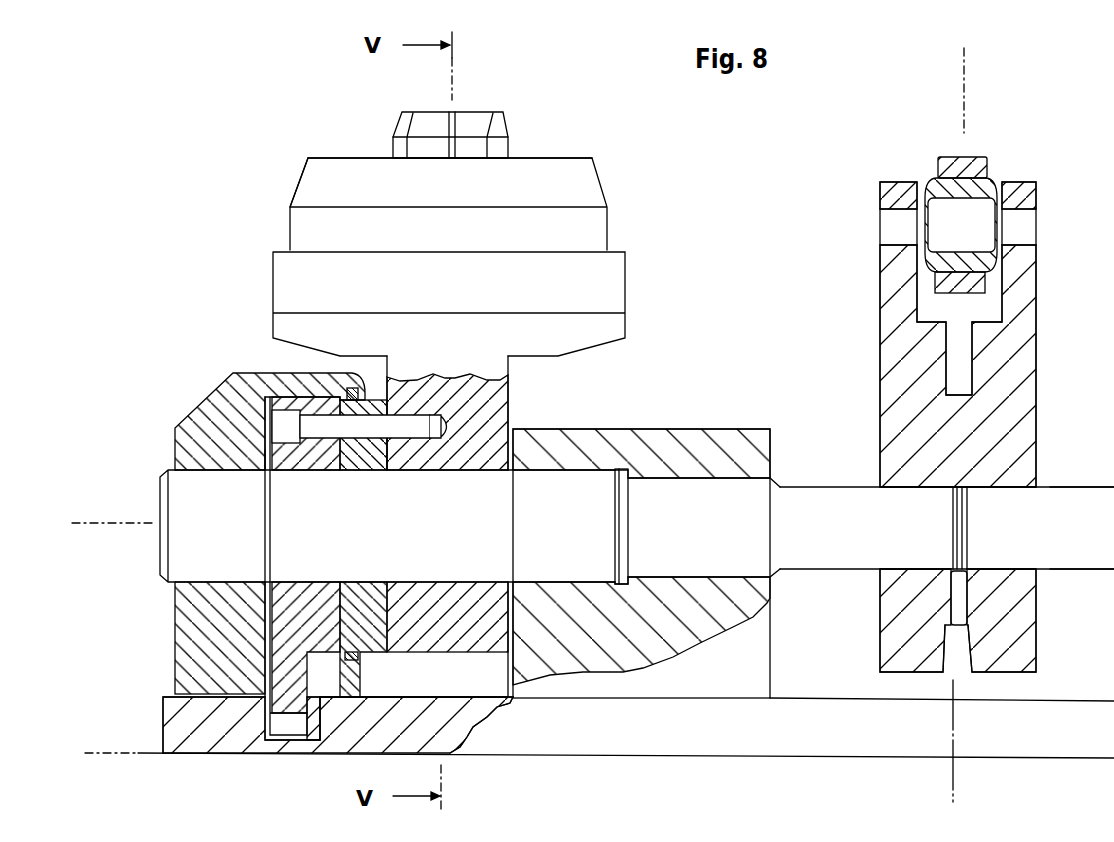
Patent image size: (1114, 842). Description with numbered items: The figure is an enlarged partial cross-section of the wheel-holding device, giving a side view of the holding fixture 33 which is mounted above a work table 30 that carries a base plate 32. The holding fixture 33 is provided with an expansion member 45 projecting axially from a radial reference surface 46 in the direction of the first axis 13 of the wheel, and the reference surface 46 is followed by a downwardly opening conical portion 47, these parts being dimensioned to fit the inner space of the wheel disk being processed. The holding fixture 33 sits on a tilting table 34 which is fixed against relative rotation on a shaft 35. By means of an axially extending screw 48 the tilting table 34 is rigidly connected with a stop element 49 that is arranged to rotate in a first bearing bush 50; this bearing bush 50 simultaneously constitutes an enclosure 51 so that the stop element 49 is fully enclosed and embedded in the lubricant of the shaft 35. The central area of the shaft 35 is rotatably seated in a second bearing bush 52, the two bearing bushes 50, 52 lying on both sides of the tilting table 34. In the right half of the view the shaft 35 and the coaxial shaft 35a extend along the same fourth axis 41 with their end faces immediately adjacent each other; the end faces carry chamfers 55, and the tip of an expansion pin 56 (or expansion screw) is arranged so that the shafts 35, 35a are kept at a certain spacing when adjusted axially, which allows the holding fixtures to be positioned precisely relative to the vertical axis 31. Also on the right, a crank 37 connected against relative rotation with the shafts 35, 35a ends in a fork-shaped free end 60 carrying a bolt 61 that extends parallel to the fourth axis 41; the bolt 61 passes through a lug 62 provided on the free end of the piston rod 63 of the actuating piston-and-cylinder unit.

The first axis 13 is at (453, 60).
The work table 30 is at (106, 746).
The vertical axis 31 is at (965, 102).
The base plate 32 is at (840, 756).
The holding fixture 33 is at (608, 183).
The tilting table 34 is at (510, 389).
The shaft 35 is at (828, 487).
The shaft 35a is at (1092, 487).
The crank 37 is at (1025, 334).
The fourth axis 41 is at (89, 520).
The expansion member 45 is at (430, 124).
The radial reference surface 46 is at (353, 157).
The conical portion 47 is at (301, 176).
The axially extending screw 48 is at (369, 432).
The stop element 49 is at (262, 450).
The first bearing bush 50 is at (203, 410).
The enclosure 51 is at (258, 390).
The second bearing bush 52 is at (702, 432).
The chamfer 55 is at (965, 486).
The expansion pin 56 is at (958, 602).
The fork-shaped free end 60 is at (899, 195).
The bolt 61 is at (886, 224).
The lug 62 is at (986, 190).
The piston rod 63 is at (953, 160).